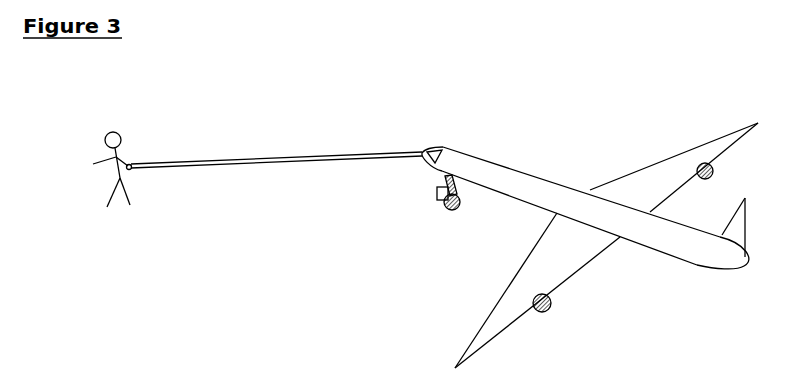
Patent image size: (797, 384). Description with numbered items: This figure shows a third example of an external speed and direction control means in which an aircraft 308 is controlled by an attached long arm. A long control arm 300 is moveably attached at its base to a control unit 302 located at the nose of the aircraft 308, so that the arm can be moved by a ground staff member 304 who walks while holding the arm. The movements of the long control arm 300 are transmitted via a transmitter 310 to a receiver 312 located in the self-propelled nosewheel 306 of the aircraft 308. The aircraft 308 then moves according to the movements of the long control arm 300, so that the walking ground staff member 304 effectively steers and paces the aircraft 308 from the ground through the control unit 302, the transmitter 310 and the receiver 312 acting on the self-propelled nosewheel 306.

The long control arm 300 is at (290, 156).
The control unit 302 is at (433, 147).
The ground staff member 304 is at (127, 202).
The self-propelled nosewheel 306 is at (452, 208).
The aircraft 308 is at (505, 211).
The transmitter 310 is at (446, 148).
The receiver 312 is at (437, 197).